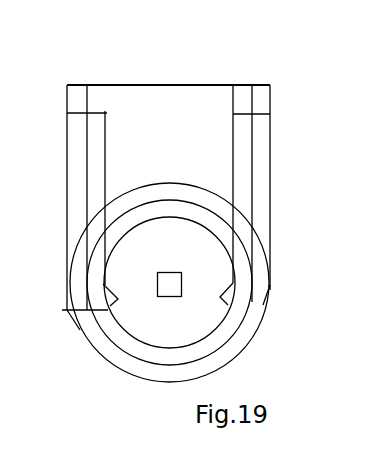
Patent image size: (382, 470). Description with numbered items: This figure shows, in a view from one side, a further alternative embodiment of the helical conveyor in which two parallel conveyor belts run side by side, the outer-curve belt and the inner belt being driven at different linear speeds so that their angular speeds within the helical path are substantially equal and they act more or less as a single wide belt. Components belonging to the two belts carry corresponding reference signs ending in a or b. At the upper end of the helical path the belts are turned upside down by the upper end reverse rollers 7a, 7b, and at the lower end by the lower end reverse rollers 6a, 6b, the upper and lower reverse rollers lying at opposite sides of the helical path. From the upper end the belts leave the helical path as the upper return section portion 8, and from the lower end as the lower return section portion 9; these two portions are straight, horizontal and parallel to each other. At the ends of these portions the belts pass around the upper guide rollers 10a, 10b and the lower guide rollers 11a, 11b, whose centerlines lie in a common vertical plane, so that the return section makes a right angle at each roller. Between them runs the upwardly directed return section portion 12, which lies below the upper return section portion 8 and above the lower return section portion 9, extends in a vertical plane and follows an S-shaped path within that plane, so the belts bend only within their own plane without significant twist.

The upwardly directed return section portion 12 is at (158, 85).
The upper guide roller 10a is at (73, 95).
The upper guide roller 10b is at (95, 97).
The lower guide roller 11a is at (263, 90).
The lower guide roller 11b is at (243, 92).
The upper return section portion 8 is at (97, 155).
The lower return section portion 9 is at (258, 150).
The upper end reverse roller 7a is at (65, 301).
The upper end reverse roller 7b is at (118, 298).
The lower end reverse roller 6a is at (272, 284).
The lower end reverse roller 6b is at (220, 297).